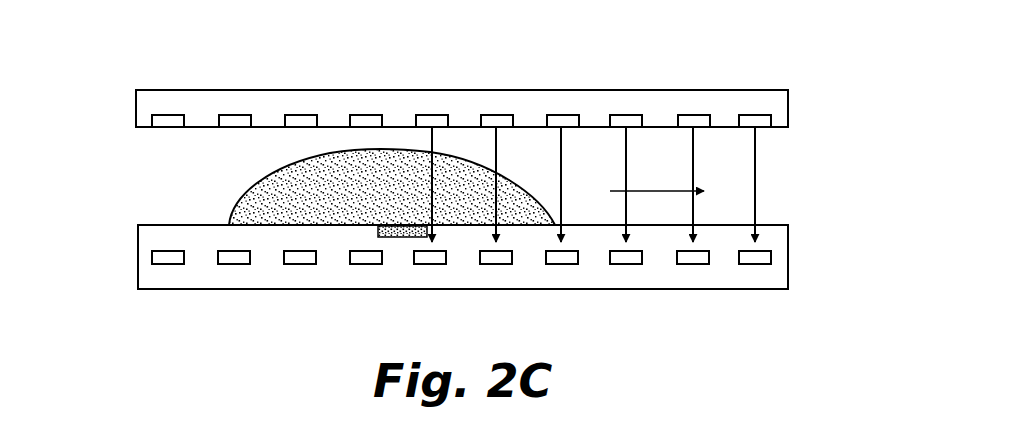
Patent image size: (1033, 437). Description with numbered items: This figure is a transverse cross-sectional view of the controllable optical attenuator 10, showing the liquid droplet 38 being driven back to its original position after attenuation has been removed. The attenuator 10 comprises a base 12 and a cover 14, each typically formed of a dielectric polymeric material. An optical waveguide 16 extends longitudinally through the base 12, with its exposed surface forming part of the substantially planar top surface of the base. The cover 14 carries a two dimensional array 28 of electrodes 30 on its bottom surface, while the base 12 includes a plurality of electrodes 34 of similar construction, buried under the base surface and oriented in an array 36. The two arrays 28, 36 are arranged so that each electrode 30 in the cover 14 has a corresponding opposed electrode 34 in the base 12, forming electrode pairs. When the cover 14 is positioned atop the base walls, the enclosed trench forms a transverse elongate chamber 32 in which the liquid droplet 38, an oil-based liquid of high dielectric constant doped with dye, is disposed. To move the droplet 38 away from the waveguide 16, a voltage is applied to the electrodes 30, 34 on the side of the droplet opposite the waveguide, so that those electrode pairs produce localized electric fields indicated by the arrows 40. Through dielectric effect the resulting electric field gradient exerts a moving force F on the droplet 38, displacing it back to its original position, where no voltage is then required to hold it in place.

The controllable optical attenuator 10 is at (770, 38).
The base 12 is at (625, 301).
The cover 14 is at (675, 86).
The optical waveguide 16 is at (400, 238).
The two dimensional array 28 is at (122, 102).
The electrodes 30 is at (236, 116).
The chamber 32 is at (162, 180).
The electrodes 34 is at (236, 262).
The array 36 is at (122, 272).
The liquid droplet 38 is at (262, 172).
The arrows 40 is at (755, 172).